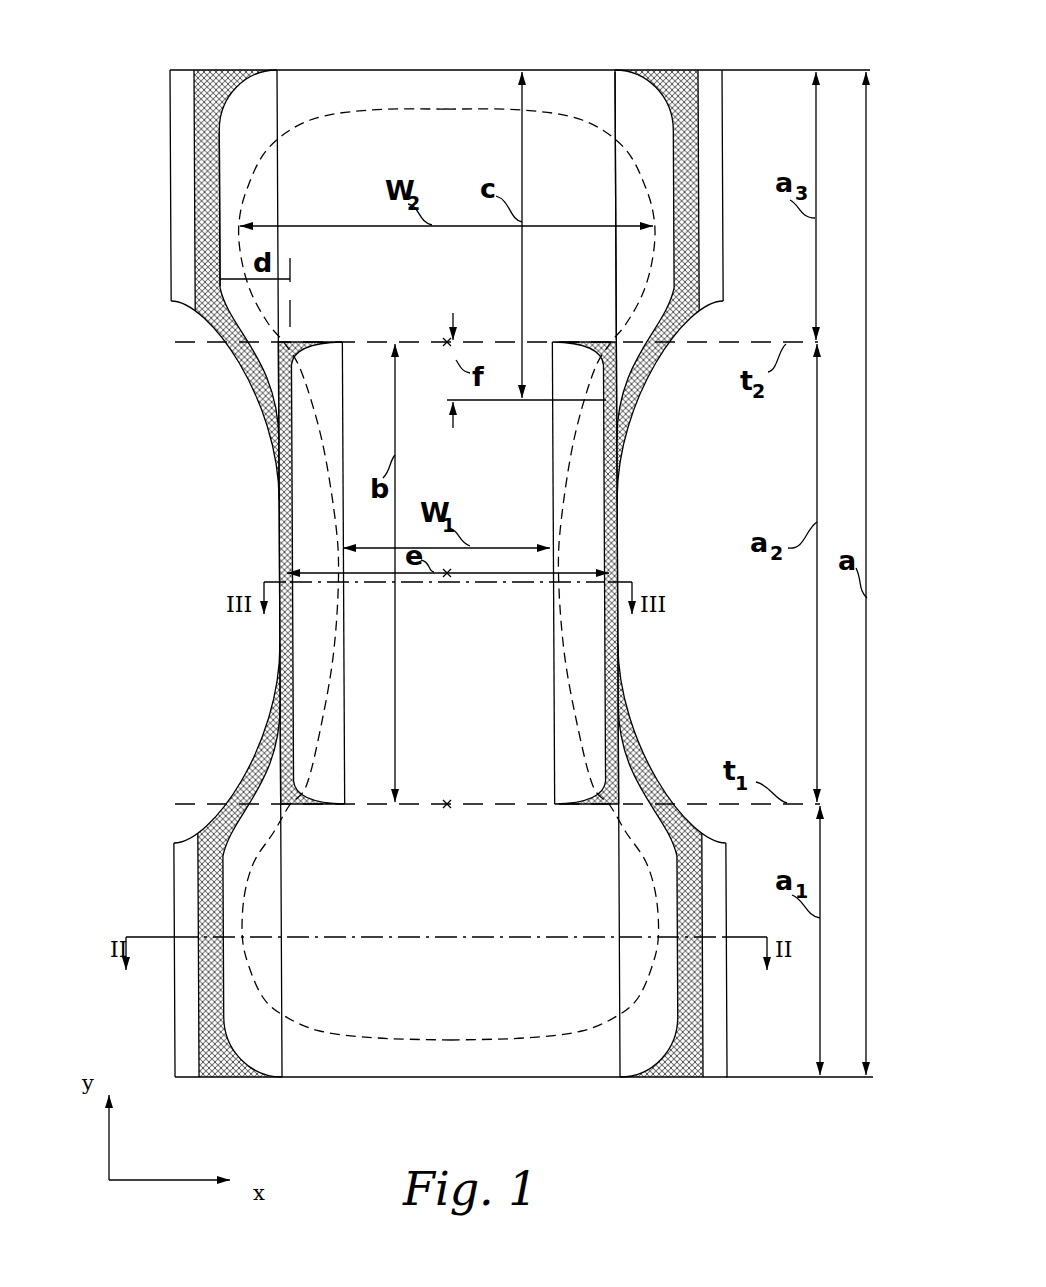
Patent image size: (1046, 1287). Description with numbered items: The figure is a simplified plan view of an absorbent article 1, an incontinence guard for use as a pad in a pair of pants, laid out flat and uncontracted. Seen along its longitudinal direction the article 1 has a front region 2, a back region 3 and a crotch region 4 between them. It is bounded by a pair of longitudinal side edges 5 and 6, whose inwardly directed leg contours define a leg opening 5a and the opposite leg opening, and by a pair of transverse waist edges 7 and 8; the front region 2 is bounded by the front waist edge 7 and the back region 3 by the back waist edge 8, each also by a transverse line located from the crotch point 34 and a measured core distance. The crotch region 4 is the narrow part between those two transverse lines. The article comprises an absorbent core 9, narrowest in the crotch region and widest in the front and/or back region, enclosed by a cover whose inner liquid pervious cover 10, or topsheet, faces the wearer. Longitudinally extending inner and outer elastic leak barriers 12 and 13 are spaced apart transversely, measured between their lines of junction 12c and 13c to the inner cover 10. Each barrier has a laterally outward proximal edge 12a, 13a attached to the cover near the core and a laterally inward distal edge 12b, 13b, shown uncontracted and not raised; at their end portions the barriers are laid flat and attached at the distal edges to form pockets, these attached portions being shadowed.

The article 1 is at (801, 17).
The front region 2 is at (424, 1022).
The back region 3 is at (488, 88).
The crotch region 4 is at (589, 521).
The longitudinal side edge 5 is at (169, 218).
The leg opening 5a is at (276, 695).
The longitudinal side edge 6 is at (724, 281).
The transverse waist edge 7 is at (473, 1077).
The transverse waist edge 8 is at (578, 68).
The absorbent core 9 is at (510, 666).
The inner liquid pervious cover 10 is at (437, 903).
The inner elastic leak barrier 12 is at (300, 541).
The proximal edge 12a is at (625, 405).
The distal edge 12b is at (549, 473).
The line of junction 12c is at (305, 346).
The outer elastic leak barrier 13 is at (260, 105).
The proximal edge 13a is at (700, 177).
The distal edge 13b is at (615, 178).
The line of junction 13c is at (221, 202).
The crotch point 34 is at (448, 581).